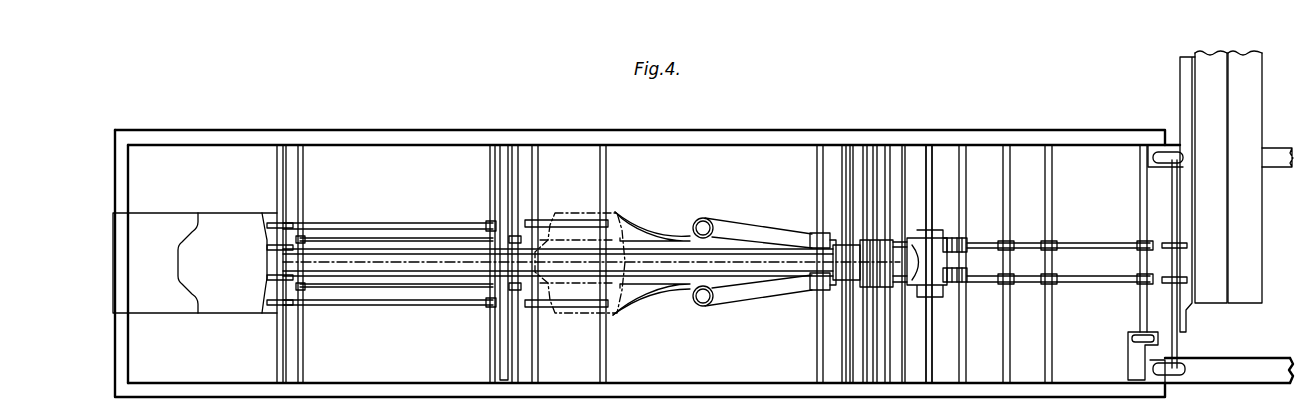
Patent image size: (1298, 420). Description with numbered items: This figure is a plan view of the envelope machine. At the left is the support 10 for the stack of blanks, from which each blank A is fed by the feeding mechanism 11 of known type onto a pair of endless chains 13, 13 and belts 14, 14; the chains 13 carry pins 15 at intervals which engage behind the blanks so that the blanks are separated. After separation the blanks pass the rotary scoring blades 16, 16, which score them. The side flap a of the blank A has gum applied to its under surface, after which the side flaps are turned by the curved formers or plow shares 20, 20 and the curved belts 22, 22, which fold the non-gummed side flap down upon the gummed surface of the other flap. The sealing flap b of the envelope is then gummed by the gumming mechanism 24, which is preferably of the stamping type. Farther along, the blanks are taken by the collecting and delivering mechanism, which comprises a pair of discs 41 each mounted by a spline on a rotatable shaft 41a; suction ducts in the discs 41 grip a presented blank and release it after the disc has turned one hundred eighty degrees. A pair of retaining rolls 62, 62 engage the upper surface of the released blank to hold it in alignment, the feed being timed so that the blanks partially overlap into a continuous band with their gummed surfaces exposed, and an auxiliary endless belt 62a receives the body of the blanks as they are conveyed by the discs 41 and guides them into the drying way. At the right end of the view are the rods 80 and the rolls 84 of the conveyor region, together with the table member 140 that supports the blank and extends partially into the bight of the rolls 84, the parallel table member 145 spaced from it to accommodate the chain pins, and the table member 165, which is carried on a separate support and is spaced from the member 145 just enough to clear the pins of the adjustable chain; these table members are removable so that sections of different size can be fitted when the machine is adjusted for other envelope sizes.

The support 10 is at (156, 212).
The blank A is at (185, 262).
The feeding mechanism 11 is at (272, 215).
The endless chains 13 is at (318, 238).
The belts 14 is at (408, 224).
The pins 15 is at (346, 239).
The rotary scoring blades 16 is at (512, 238).
The side flap a is at (575, 213).
The sealing flap b is at (495, 263).
The curved formers 20 is at (643, 226).
The curved belts 22 is at (765, 227).
The gumming mechanism 24 is at (872, 240).
The discs 41 is at (912, 280).
The rotatable shaft 41a is at (934, 155).
The retaining rolls 62 is at (966, 250).
The auxiliary endless belt 62a is at (1016, 257).
The rods 80 is at (1082, 276).
The rolls 84 is at (1190, 280).
The table member 140 is at (1183, 110).
The table member 145 is at (1207, 60).
The table member 165 is at (1248, 62).